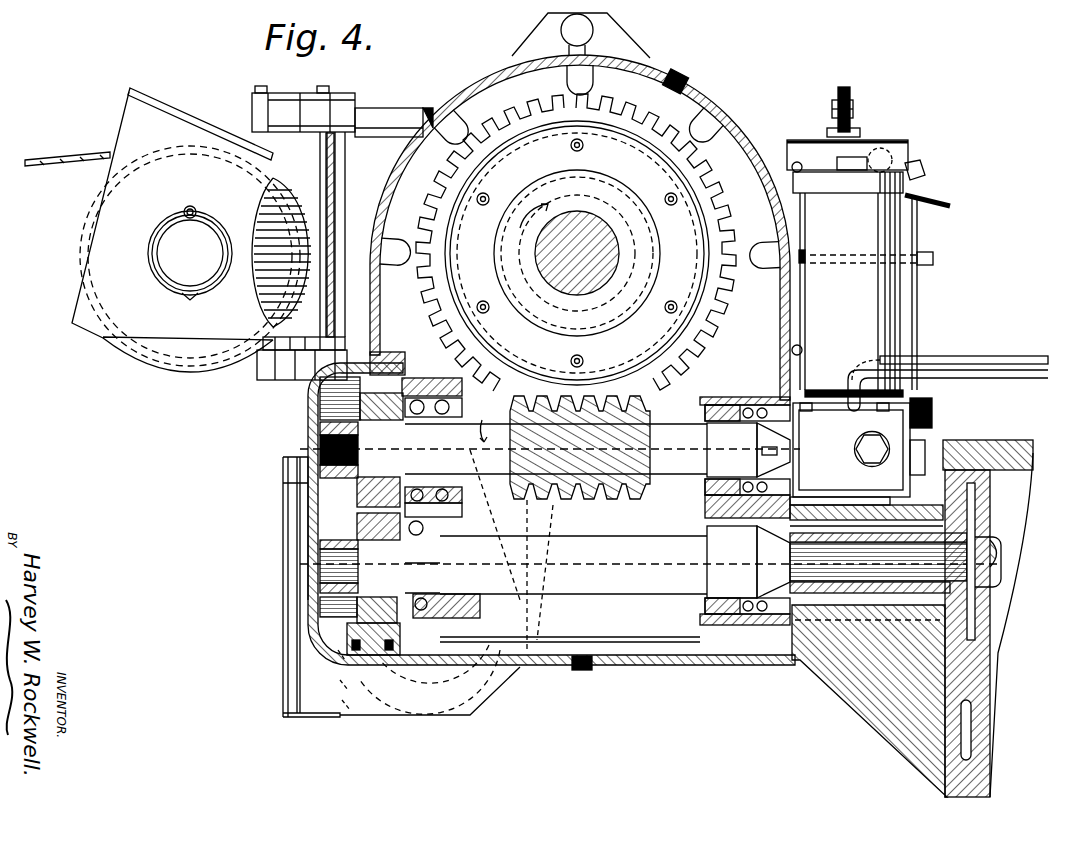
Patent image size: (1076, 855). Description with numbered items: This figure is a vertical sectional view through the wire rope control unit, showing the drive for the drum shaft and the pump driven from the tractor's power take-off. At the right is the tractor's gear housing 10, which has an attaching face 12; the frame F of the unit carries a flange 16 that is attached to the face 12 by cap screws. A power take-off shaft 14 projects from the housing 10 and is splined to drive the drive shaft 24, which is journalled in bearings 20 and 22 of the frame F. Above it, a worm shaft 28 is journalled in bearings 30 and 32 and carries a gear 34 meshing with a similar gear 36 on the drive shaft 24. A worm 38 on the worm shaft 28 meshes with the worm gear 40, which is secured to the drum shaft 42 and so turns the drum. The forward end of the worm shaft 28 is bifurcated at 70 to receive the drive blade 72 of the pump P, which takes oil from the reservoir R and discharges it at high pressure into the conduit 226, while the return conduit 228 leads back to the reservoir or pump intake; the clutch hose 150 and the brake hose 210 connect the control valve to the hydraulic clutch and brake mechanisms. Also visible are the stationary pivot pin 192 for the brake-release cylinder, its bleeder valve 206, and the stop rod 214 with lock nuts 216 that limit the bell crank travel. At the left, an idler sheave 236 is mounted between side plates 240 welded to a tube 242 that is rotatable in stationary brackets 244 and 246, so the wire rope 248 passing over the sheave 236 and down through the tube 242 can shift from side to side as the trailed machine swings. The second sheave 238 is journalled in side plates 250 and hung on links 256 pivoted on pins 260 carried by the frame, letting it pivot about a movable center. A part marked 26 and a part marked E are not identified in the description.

The gear housing 10 is at (985, 446).
The attaching face 12 is at (968, 668).
The power take-off shaft 14 is at (988, 534).
The flange 16 is at (953, 470).
The bearing 20 is at (440, 618).
The bearing 22 is at (724, 620).
The drive shaft 24 is at (577, 596).
The support bracket 26 is at (855, 594).
The worm shaft 28 is at (675, 476).
The bearing 30 is at (432, 380).
The bearing 32 is at (728, 397).
The gear 34 is at (358, 496).
The gear 36 is at (358, 519).
The worm 38 is at (640, 494).
The worm gear 40 is at (722, 328).
The drum shaft 42 is at (552, 292).
The bifurcated forward end 70 is at (785, 438).
The drive blade 72 is at (780, 452).
The clutch hose 150 is at (937, 262).
The stationary pivot pin 192 is at (898, 140).
The bleeder valve 206 is at (921, 166).
The hose 210 is at (937, 198).
The stop rod 214 is at (853, 95).
The lock nuts 216 is at (855, 110).
The high pressure conduit 226 is at (925, 358).
The return conduit 228 is at (965, 377).
The idler sheave 236 is at (85, 212).
The idler sheave 238 is at (520, 670).
The side plates 240 is at (133, 322).
The tube 242 is at (299, 138).
The stationary bracket 244 is at (375, 115).
The stationary bracket 246 is at (257, 372).
The wire rope 248 is at (52, 162).
The side plates 250 is at (455, 705).
The links 256 is at (283, 508).
The pins 260 is at (303, 447).
The gear housing E is at (703, 98).
The frame F is at (779, 676).
The pump P is at (895, 422).
The reservoir R is at (887, 300).